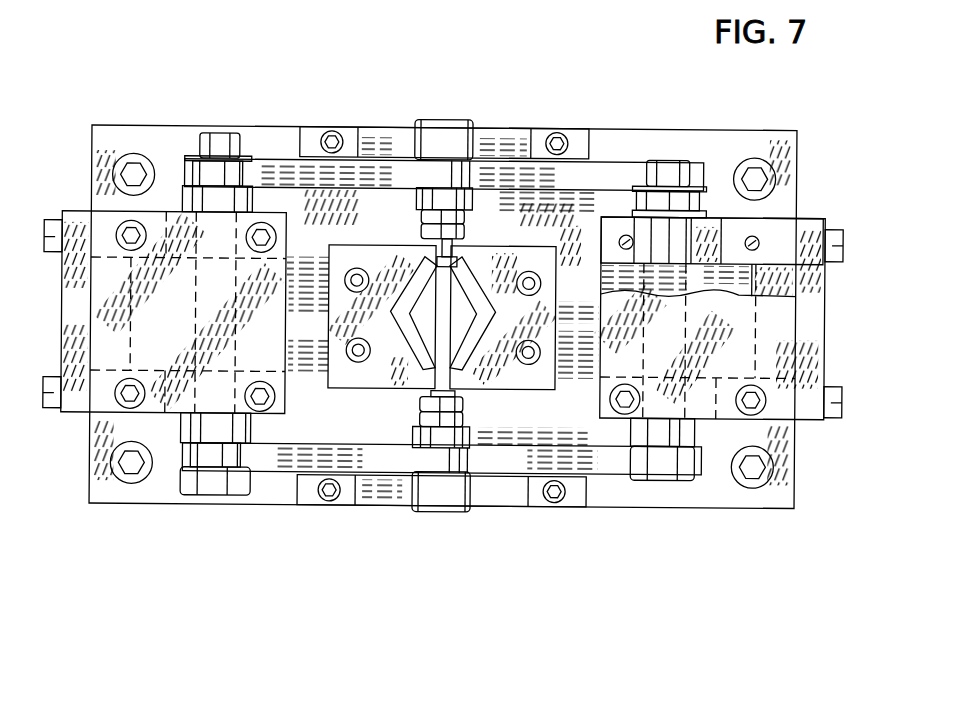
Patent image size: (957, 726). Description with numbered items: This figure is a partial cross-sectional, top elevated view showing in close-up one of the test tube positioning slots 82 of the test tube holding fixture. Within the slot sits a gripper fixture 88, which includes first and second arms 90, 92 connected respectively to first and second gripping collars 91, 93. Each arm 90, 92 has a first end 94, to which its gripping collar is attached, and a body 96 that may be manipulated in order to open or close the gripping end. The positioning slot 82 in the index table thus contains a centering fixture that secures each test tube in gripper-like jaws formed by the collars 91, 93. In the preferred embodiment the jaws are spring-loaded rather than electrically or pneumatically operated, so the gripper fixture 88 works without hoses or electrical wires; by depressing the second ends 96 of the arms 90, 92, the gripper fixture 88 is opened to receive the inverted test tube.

The test tube positioning slot 82 is at (167, 147).
The gripper fixture 88 is at (407, 398).
The first arm 90 is at (307, 268).
The first gripping collar 91 is at (427, 256).
The second arm 92 is at (592, 209).
The second gripping collar 93 is at (463, 258).
The first end 94 is at (352, 252).
The body 96 is at (107, 223).